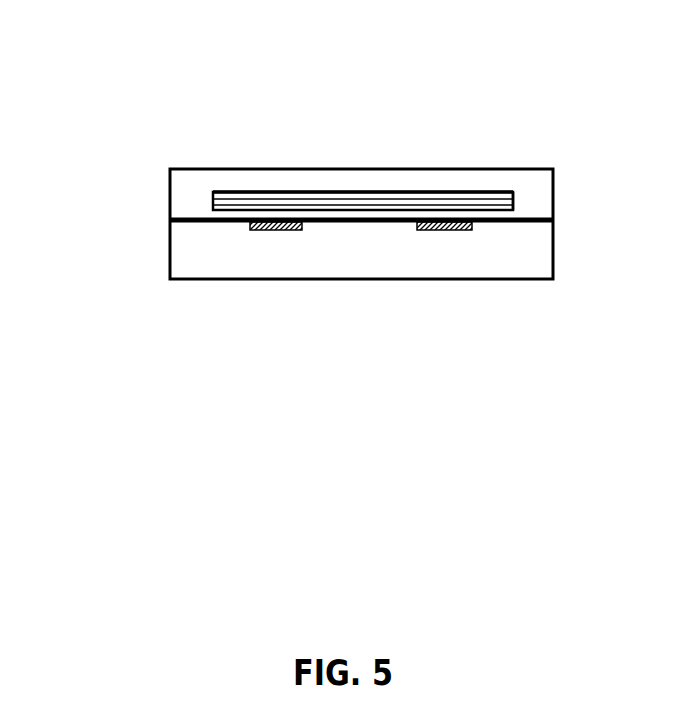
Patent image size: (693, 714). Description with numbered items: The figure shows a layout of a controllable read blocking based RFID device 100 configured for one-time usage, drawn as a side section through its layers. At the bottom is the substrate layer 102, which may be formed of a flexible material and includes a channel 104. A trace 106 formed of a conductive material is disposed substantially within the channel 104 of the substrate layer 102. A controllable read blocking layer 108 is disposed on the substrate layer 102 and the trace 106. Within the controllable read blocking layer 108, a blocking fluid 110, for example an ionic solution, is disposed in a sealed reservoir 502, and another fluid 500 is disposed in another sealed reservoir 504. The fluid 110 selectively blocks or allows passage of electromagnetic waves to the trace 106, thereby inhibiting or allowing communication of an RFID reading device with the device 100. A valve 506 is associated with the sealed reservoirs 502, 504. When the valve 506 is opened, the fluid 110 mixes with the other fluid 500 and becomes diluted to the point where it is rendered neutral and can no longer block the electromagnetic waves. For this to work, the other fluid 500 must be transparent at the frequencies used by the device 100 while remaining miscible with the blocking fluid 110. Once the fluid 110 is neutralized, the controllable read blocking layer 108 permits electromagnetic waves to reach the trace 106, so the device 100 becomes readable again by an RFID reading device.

The device 100 is at (339, 302).
The substrate layer 102 is at (555, 257).
The channel 104 is at (247, 223).
The trace 106 is at (263, 228).
The controllable read blocking layer 108 is at (555, 196).
The fluid 110 is at (243, 192).
The other fluid 500 is at (401, 198).
The sealed reservoir 502 is at (212, 194).
The sealed reservoir 504 is at (212, 205).
The valve 506 is at (511, 196).